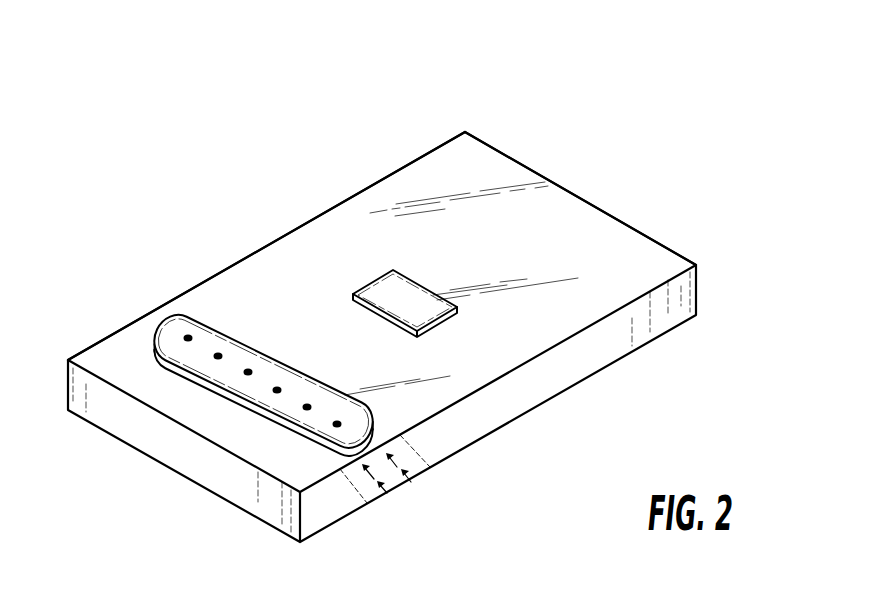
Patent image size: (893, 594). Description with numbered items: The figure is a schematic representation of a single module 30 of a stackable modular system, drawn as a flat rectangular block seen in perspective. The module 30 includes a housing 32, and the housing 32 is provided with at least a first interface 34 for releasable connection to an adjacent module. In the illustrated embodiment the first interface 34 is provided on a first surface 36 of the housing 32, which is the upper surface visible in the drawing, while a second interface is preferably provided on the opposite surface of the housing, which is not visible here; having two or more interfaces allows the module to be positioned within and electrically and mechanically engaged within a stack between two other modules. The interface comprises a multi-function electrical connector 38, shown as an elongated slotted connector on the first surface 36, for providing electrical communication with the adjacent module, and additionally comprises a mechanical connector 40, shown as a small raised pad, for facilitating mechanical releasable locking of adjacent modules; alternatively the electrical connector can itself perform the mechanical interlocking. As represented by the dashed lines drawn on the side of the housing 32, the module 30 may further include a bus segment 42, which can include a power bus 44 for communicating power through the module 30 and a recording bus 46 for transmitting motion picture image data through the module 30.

The module 30 is at (304, 128).
The housing 32 is at (682, 305).
The first interface 34 is at (293, 256).
The first surface 36 is at (453, 165).
The multi-function electrical connector 38 is at (375, 419).
The mechanical connector 40 is at (405, 288).
The bus segment 42 is at (433, 482).
The power bus 44 is at (373, 478).
The recording bus 46 is at (395, 458).